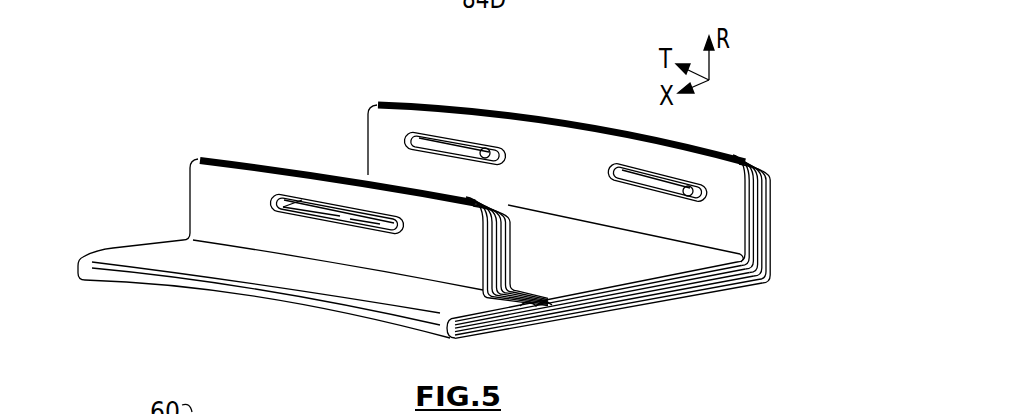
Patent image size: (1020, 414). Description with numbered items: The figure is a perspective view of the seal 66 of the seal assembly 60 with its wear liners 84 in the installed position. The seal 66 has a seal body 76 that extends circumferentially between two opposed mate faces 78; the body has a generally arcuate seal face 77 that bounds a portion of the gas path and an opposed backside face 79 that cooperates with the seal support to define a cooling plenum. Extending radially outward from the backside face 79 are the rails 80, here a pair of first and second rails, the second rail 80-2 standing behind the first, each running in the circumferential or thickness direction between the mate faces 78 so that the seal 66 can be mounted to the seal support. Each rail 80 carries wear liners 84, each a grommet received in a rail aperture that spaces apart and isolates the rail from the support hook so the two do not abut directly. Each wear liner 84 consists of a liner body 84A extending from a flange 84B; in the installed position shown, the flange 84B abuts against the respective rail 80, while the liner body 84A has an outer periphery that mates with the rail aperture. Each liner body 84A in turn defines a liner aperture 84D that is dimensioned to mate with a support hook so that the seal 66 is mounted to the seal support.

The seal assembly 60 is at (289, 72).
The seal 66 is at (199, 150).
The seal body 76 is at (593, 277).
The seal face 77 is at (554, 320).
The mate faces 78 is at (128, 242).
The backside face 79 is at (690, 258).
The rail 80 is at (238, 158).
The second rail 80-2 is at (428, 104).
The wear liner 84 is at (308, 198).
The liner body 84A is at (327, 213).
The flange 84B is at (287, 217).
The liner aperture 84D is at (349, 222).